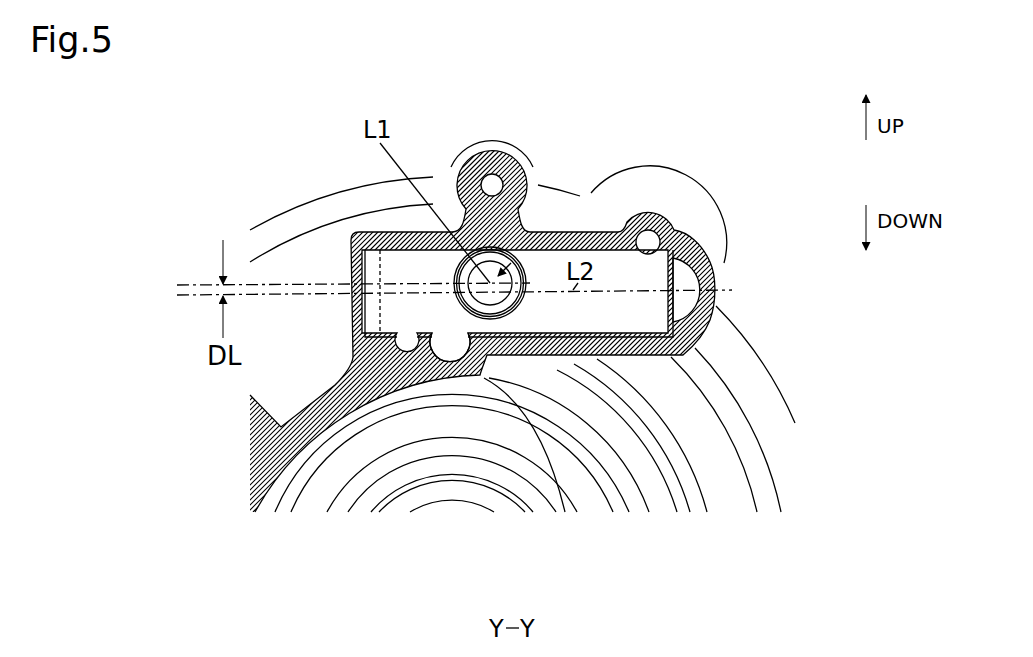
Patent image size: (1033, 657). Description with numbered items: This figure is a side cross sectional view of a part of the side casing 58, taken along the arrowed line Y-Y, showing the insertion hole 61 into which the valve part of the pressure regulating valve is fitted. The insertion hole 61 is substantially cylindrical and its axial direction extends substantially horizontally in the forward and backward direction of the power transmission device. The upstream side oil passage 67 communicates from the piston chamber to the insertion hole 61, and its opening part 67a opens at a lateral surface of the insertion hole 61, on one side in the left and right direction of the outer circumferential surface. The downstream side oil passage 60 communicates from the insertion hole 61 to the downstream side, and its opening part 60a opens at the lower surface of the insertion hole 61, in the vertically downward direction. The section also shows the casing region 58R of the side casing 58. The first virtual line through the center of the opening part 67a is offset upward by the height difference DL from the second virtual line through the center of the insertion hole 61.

The insertion hole 61 is at (368, 268).
The opening part of the upstream side oil passage 67a is at (538, 236).
The upstream side oil passage 67 is at (569, 211).
The right bolt hole 58R is at (661, 212).
The side casing 58 is at (710, 184).
The opening part of the downstream side oil passage 60a is at (452, 354).
The downstream side oil passage 60 is at (387, 461).